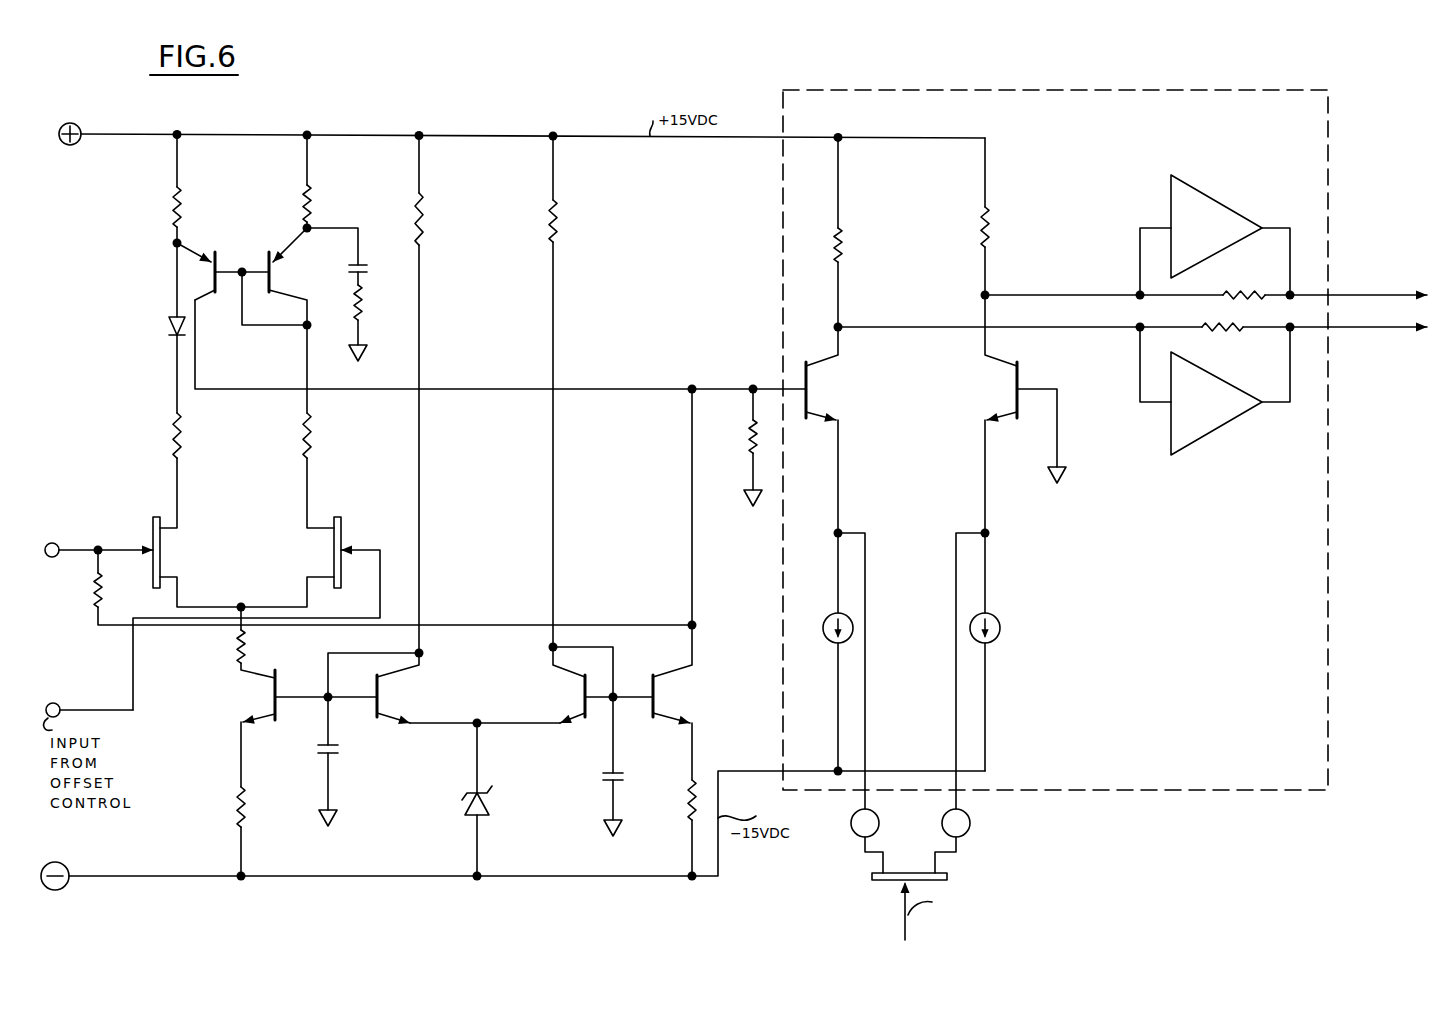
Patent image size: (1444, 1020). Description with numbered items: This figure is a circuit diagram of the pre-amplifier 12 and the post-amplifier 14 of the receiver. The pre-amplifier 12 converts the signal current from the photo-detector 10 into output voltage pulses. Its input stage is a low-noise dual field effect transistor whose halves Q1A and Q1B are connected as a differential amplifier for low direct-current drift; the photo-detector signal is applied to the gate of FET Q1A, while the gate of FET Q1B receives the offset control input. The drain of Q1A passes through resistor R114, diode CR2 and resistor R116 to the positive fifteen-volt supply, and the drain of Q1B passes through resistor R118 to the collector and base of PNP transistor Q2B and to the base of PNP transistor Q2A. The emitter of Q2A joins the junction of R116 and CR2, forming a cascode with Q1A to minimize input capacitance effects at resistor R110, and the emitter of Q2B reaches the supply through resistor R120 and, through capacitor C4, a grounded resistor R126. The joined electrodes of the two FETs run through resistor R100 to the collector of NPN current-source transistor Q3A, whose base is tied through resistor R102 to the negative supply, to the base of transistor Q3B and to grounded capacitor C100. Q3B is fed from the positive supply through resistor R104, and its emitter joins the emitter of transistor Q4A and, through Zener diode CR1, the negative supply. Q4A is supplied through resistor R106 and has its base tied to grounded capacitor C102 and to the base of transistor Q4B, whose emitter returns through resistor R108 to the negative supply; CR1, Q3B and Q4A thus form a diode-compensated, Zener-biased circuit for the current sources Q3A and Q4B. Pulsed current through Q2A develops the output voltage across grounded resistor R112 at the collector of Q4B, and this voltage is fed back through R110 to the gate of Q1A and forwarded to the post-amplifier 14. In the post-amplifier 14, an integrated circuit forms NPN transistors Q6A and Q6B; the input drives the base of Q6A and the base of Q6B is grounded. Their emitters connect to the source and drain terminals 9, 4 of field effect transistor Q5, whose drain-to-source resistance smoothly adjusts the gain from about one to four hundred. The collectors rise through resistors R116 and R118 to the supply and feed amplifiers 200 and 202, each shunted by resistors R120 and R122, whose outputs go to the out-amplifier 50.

The resistor R116 is at (172, 204).
The resistor R120 is at (305, 200).
The resistor R104 is at (415, 200).
The resistor R106 is at (548, 205).
The capacitor C4 is at (366, 267).
The resistor R126 is at (365, 316).
The PNP transistor Q2A is at (212, 273).
The PNP transistor Q2B is at (272, 273).
The diode CR2 is at (172, 325).
The resistor R114 is at (172, 440).
The resistor R118 is at (312, 438).
The field effect transistor Q1A is at (160, 546).
The field effect transistor Q1B is at (334, 548).
The resistor R110 is at (94, 588).
The photo-detector 10 is at (44, 540).
The resistor R100 is at (238, 652).
The NPN transistor Q3A is at (270, 690).
The NPN transistor Q3B is at (378, 692).
The capacitor C100 is at (340, 762).
The resistor R102 is at (236, 800).
The Zener diode CR1 is at (472, 792).
The NPN transistor Q4A is at (584, 690).
The NPN transistor Q4B is at (658, 697).
The capacitor C102 is at (598, 776).
The resistor R108 is at (688, 804).
The resistor R112 is at (748, 442).
The pre-amplifier 12 is at (267, 913).
The post-amplifier 14 is at (1055, 458).
The NPN transistor Q6A is at (812, 394).
The NPN transistor Q6B is at (1014, 394).
The terminal 9 is at (867, 841).
The terminal 4 is at (952, 841).
The field effect transistor Q5 is at (924, 846).
The resistor R122 is at (1212, 331).
The amplifier 200 is at (1204, 206).
The amplifier 202 is at (1216, 424).
The out-amplifier 50 is at (1414, 318).